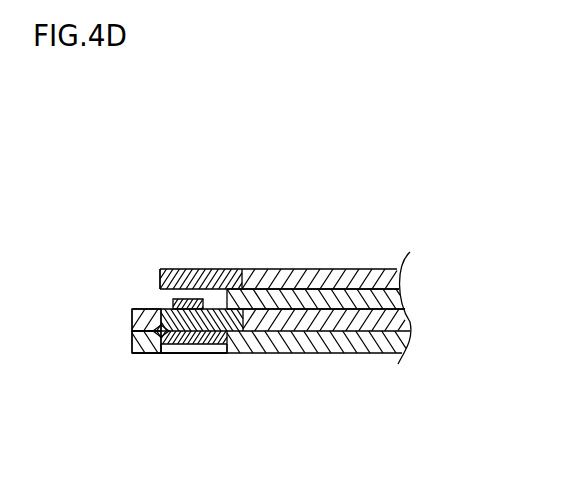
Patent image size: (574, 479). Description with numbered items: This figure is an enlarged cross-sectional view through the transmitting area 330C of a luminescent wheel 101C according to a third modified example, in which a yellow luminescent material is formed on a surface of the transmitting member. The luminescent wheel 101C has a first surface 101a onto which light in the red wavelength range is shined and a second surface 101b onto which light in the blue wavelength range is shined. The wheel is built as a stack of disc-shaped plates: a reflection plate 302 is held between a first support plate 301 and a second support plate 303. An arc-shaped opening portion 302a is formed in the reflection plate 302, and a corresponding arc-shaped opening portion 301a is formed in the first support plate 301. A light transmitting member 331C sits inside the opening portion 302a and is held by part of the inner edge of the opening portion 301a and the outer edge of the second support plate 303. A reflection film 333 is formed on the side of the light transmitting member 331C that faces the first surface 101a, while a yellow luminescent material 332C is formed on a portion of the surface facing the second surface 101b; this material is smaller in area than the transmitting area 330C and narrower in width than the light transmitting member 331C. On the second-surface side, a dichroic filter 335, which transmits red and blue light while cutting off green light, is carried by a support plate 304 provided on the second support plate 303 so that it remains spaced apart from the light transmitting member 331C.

The luminescent wheel 101C is at (370, 230).
The first surface 101a is at (163, 357).
The second surface 101b is at (157, 268).
The first support plate 301 is at (143, 340).
The opening portion 301a is at (185, 348).
The reflection plate 302 is at (143, 322).
The opening portion 302a is at (240, 318).
The second support plate 303 is at (343, 297).
The support plate 304 is at (319, 231).
The transmitting area 330C is at (258, 210).
The light transmitting member 331C is at (178, 318).
The yellow luminescent material 332C is at (197, 303).
The reflection film 333 is at (203, 338).
The dichroic filter 335 is at (173, 272).